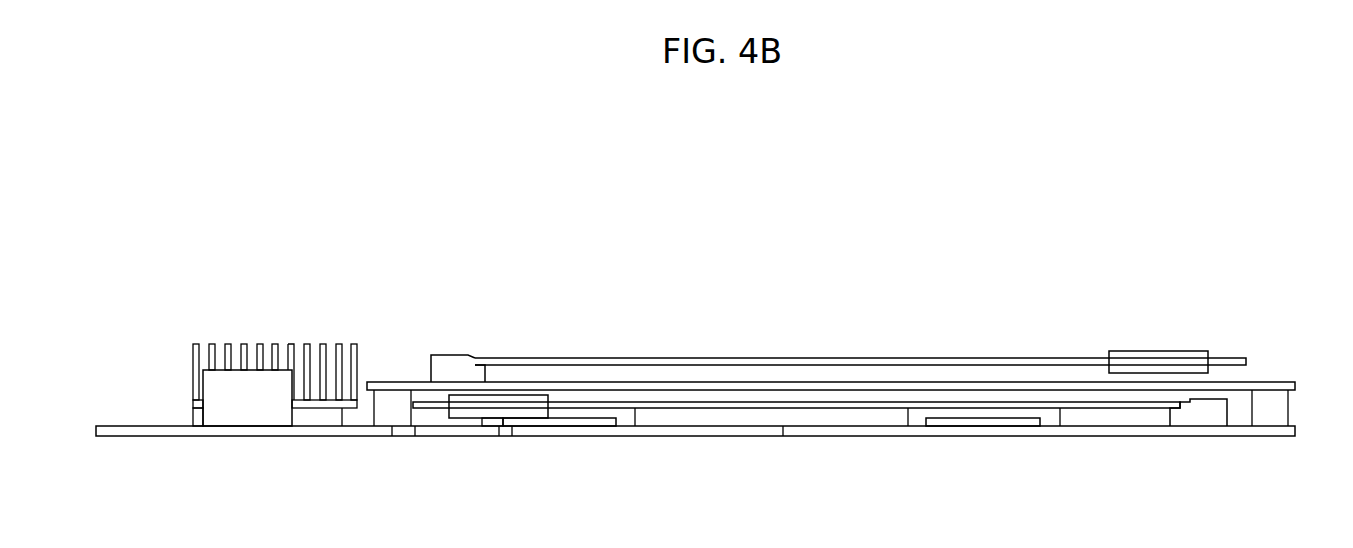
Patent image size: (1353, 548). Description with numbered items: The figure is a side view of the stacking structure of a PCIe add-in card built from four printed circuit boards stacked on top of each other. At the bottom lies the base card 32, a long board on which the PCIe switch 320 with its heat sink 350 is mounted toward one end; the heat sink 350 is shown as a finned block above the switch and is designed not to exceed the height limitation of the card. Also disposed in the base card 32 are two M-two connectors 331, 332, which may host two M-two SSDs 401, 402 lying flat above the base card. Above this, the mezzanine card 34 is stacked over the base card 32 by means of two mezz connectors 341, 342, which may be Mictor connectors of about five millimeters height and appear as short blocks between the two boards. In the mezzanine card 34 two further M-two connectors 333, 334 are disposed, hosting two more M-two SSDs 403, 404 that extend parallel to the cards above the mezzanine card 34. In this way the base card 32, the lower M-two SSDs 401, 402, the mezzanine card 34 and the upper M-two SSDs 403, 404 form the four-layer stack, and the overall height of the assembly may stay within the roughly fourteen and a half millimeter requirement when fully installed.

The base card 32 is at (148, 421).
The PCIe switch 320 is at (237, 340).
The heat sink 350 is at (275, 385).
The mezzanine card 34 is at (1273, 376).
The M.2 connector 331 is at (488, 297).
The M.2 connector 332 is at (498, 406).
The M.2 connector 333 is at (1158, 362).
The M.2 connector 334 is at (1192, 425).
The M.2 SSD 401 is at (883, 399).
The M.2 SSD 402 is at (796, 405).
The M.2 SSD 403 is at (860, 328).
The M.2 SSD 404 is at (796, 405).
The mezz connector 341 is at (906, 431).
The mezz connector 342 is at (984, 417).